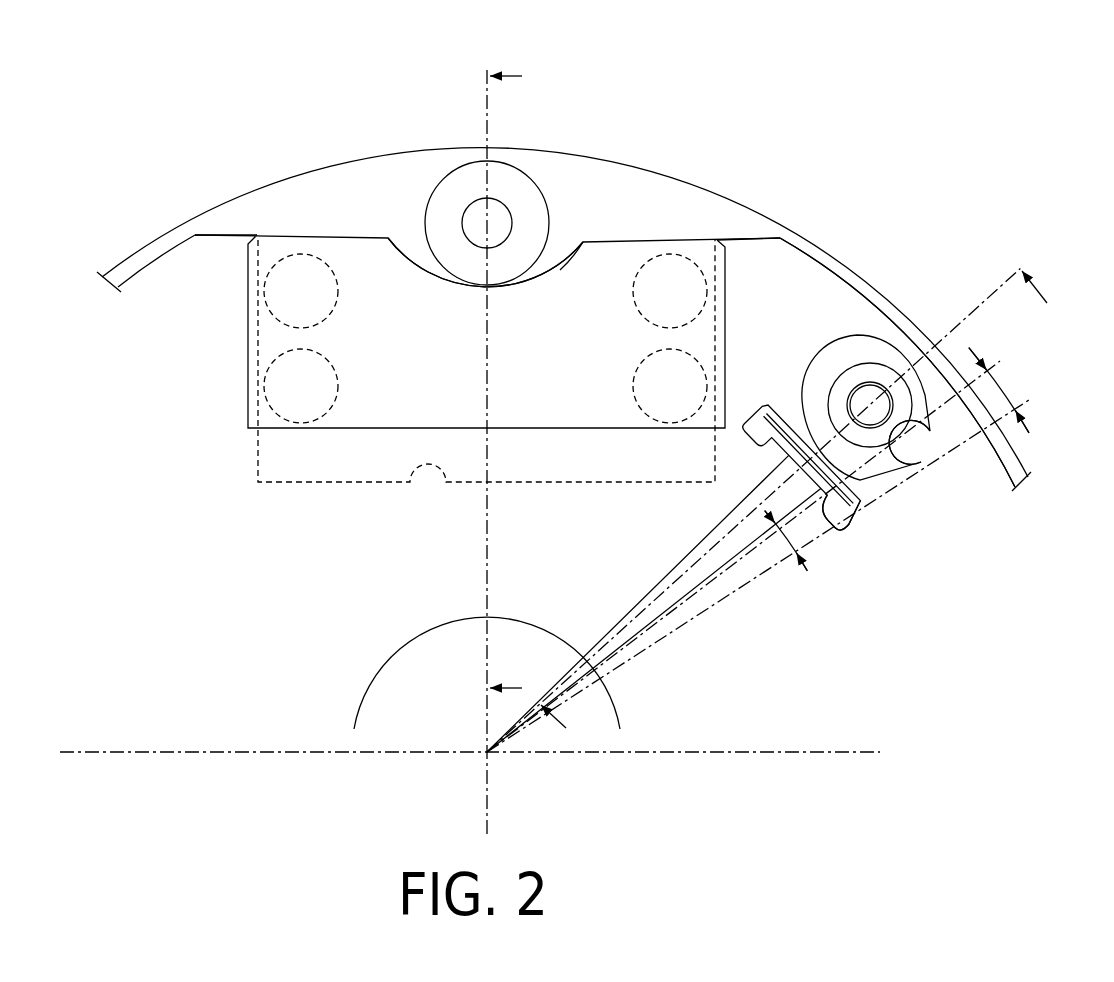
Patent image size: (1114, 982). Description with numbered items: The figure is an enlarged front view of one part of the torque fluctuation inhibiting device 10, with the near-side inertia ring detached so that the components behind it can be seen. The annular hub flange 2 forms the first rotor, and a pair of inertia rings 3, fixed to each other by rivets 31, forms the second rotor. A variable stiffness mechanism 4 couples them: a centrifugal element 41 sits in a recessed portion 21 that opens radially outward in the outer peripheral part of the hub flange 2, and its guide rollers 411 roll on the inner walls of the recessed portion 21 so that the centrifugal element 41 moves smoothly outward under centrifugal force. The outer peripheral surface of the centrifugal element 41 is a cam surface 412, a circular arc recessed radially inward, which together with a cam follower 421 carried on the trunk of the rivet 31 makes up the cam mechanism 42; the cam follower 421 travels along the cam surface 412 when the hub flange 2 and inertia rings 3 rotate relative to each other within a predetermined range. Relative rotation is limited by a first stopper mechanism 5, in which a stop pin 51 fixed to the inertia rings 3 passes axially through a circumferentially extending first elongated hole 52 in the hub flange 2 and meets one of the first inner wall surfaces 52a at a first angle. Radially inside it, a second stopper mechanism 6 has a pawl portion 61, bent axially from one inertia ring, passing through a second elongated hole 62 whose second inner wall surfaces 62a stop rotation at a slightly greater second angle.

The torque fluctuation inhibiting device 10 is at (888, 102).
The hub flange 2 is at (818, 280).
The inertia rings 3 is at (757, 214).
The variable stiffness mechanism 4 is at (394, 176).
The centrifugal element 41 is at (313, 237).
The cam mechanism 42 is at (412, 244).
The guide rollers 411 is at (277, 293).
The cam surface 412 is at (573, 247).
The cam follower 421 is at (512, 180).
The rivets 31 is at (477, 218).
The recessed portion 21 is at (410, 495).
The first stopper mechanism 5 is at (908, 496).
The stop pin 51 is at (879, 380).
The first elongated hole 52 is at (845, 345).
The first inner wall surfaces 52a is at (958, 470).
The second stopper mechanism 6 is at (837, 535).
The pawl portion 61 is at (745, 499).
The second elongated hole 62 is at (767, 423).
The second inner wall surfaces 62a is at (858, 513).